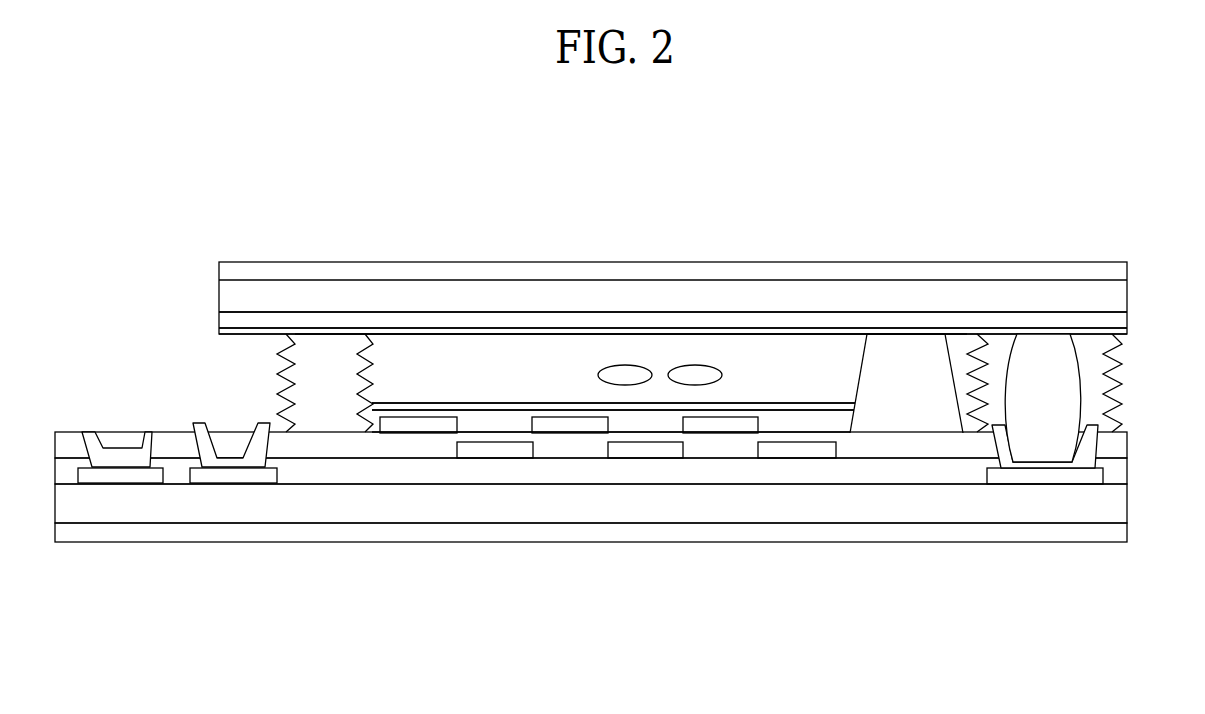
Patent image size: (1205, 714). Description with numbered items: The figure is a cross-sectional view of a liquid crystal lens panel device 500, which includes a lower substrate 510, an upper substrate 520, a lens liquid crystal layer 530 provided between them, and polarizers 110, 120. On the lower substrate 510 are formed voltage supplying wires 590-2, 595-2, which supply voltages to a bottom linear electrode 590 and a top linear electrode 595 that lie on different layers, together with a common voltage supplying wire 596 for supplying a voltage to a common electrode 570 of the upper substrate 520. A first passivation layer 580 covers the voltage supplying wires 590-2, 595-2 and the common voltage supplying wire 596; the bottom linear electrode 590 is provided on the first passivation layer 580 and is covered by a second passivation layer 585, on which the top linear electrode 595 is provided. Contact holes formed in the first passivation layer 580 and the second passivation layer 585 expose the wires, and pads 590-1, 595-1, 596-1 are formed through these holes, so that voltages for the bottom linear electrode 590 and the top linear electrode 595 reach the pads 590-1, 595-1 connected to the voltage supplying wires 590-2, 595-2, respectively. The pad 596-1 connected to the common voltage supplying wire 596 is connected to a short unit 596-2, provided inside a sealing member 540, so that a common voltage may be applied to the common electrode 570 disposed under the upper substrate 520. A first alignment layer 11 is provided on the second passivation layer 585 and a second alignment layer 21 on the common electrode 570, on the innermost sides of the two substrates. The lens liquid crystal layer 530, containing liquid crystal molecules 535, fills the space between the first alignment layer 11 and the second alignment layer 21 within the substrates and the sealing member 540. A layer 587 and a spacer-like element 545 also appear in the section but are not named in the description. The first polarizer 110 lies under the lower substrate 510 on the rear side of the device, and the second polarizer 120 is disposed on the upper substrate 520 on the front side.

The liquid crystal lens panel device 500 is at (1124, 248).
The first polarizer 110 is at (1060, 533).
The second polarizer 120 is at (1037, 273).
The lower substrate 510 is at (297, 527).
The upper substrate 520 is at (950, 303).
The common electrode 570 is at (872, 323).
The second alignment layer 21 is at (798, 337).
The first alignment layer 11 is at (588, 407).
The planarization layer 587 is at (498, 422).
The lens liquid crystal layer 530 is at (800, 385).
The liquid crystal molecules 535 is at (693, 385).
The sealing member 540 is at (323, 375).
The column spacer 545 is at (908, 400).
The first passivation layer 580 is at (357, 470).
The second passivation layer 585 is at (412, 445).
The bottom linear electrode 590 is at (492, 453).
The top linear electrode 595 is at (582, 425).
The pad 590-1 is at (92, 440).
The voltage supplying wire 590-2 is at (122, 475).
The pad 595-1 is at (207, 430).
The voltage supplying wire 595-2 is at (232, 475).
The common voltage supplying wire 596 is at (1075, 478).
The pad 596-1 is at (1085, 442).
The short unit 596-2 is at (1055, 373).